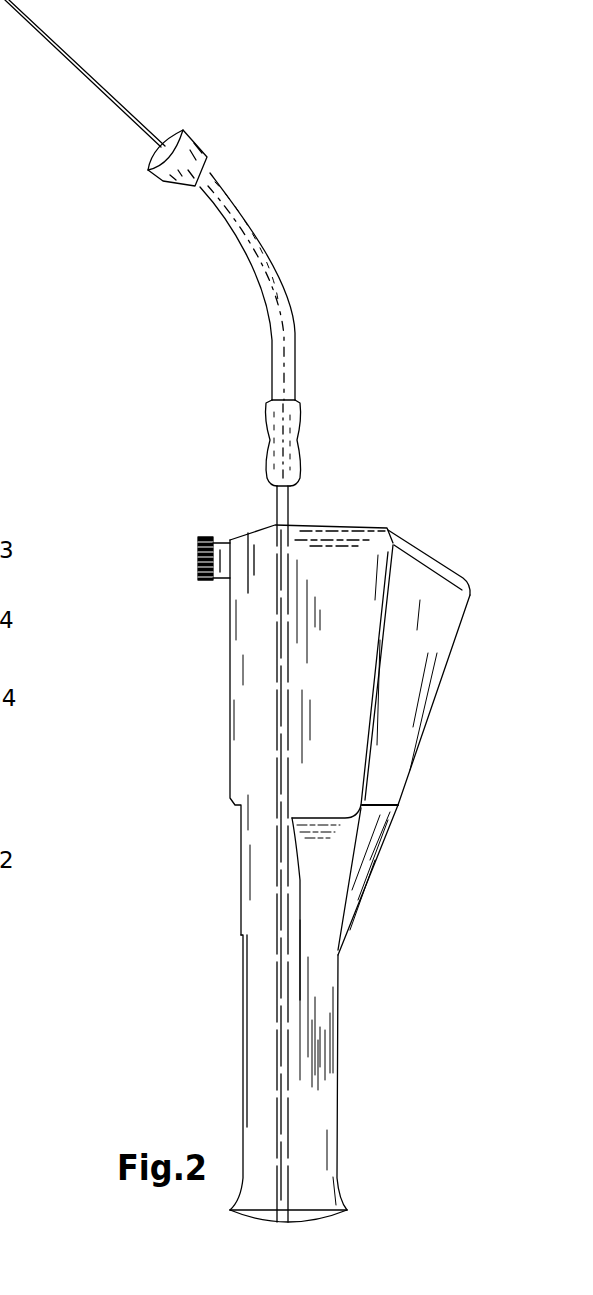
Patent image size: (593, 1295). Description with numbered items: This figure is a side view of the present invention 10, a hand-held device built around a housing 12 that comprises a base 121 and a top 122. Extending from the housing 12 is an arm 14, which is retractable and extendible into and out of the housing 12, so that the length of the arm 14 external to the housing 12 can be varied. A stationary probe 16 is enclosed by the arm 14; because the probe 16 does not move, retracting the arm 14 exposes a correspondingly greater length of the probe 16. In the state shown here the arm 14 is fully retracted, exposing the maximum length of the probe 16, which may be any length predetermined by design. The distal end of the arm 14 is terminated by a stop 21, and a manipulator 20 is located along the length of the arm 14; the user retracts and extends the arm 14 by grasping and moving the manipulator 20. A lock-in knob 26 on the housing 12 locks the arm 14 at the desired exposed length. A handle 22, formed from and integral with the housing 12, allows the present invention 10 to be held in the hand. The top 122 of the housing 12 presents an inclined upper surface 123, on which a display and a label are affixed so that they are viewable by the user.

The present invention 10 is at (199, 1060).
The housing 12 is at (256, 838).
The arm 14 is at (272, 257).
The probe 16 is at (68, 47).
The manipulator 20 is at (300, 440).
The stop 21 is at (200, 142).
The handle 22 is at (340, 1038).
The lock-in knob 26 is at (198, 547).
The base 121 is at (245, 983).
The top 122 is at (338, 968).
The inclined upper surface 123 is at (474, 582).